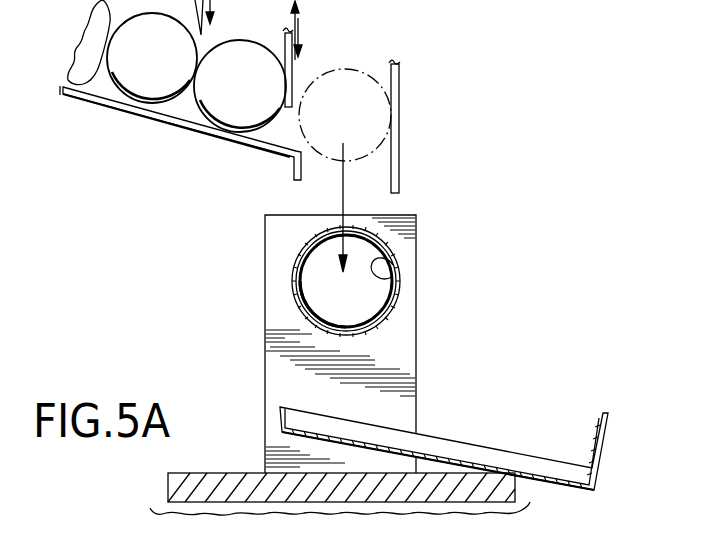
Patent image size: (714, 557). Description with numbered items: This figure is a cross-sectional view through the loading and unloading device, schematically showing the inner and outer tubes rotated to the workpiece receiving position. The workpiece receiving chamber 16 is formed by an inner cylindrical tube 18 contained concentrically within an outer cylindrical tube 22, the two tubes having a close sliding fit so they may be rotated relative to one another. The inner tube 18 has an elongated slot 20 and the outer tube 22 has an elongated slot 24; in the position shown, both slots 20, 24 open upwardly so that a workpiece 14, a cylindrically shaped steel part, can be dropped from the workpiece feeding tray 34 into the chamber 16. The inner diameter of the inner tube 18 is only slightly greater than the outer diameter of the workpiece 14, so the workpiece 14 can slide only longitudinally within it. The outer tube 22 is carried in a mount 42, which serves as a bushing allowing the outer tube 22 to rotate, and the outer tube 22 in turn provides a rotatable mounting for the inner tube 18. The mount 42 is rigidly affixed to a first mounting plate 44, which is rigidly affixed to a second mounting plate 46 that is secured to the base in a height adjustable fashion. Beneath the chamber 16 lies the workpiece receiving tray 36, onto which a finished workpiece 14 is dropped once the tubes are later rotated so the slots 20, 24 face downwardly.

The workpiece 14 is at (217, 108).
The workpiece feeding tray 34 is at (97, 104).
The workpiece receiving chamber 16 is at (363, 309).
The inner cylindrical tube 18 is at (312, 304).
The elongated slot 20 is at (392, 274).
The outer cylindrical tube 22 is at (394, 313).
The elongated slot 24 is at (377, 236).
The mount 42 is at (280, 372).
The workpiece receiving tray 36 is at (540, 467).
The first mounting plate 44 is at (182, 492).
The second mounting plate 46 is at (206, 511).